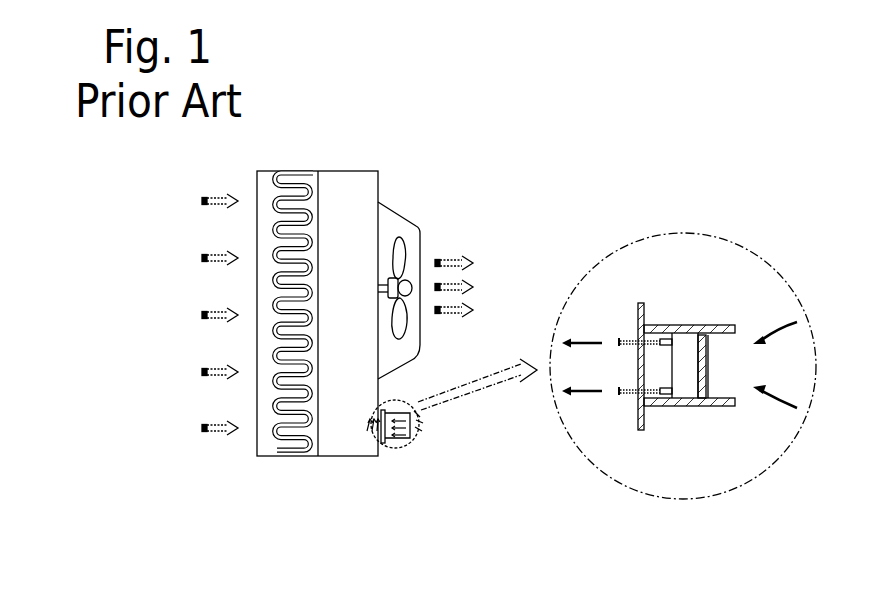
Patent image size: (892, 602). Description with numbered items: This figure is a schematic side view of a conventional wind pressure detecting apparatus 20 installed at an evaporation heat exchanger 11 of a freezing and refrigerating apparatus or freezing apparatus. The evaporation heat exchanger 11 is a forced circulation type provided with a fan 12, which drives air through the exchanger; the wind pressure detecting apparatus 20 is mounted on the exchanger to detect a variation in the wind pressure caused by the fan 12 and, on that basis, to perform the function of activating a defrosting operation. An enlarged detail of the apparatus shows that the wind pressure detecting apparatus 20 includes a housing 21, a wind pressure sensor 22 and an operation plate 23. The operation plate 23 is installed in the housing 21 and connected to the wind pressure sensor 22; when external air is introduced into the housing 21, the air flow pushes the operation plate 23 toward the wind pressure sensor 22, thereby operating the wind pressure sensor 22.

The evaporation heat exchanger 11 is at (346, 155).
The fan 12 is at (409, 238).
The wind pressure detecting apparatus 20 is at (407, 458).
The housing 21 is at (683, 325).
The wind pressure sensor 22 is at (686, 390).
The operation plate 23 is at (708, 366).